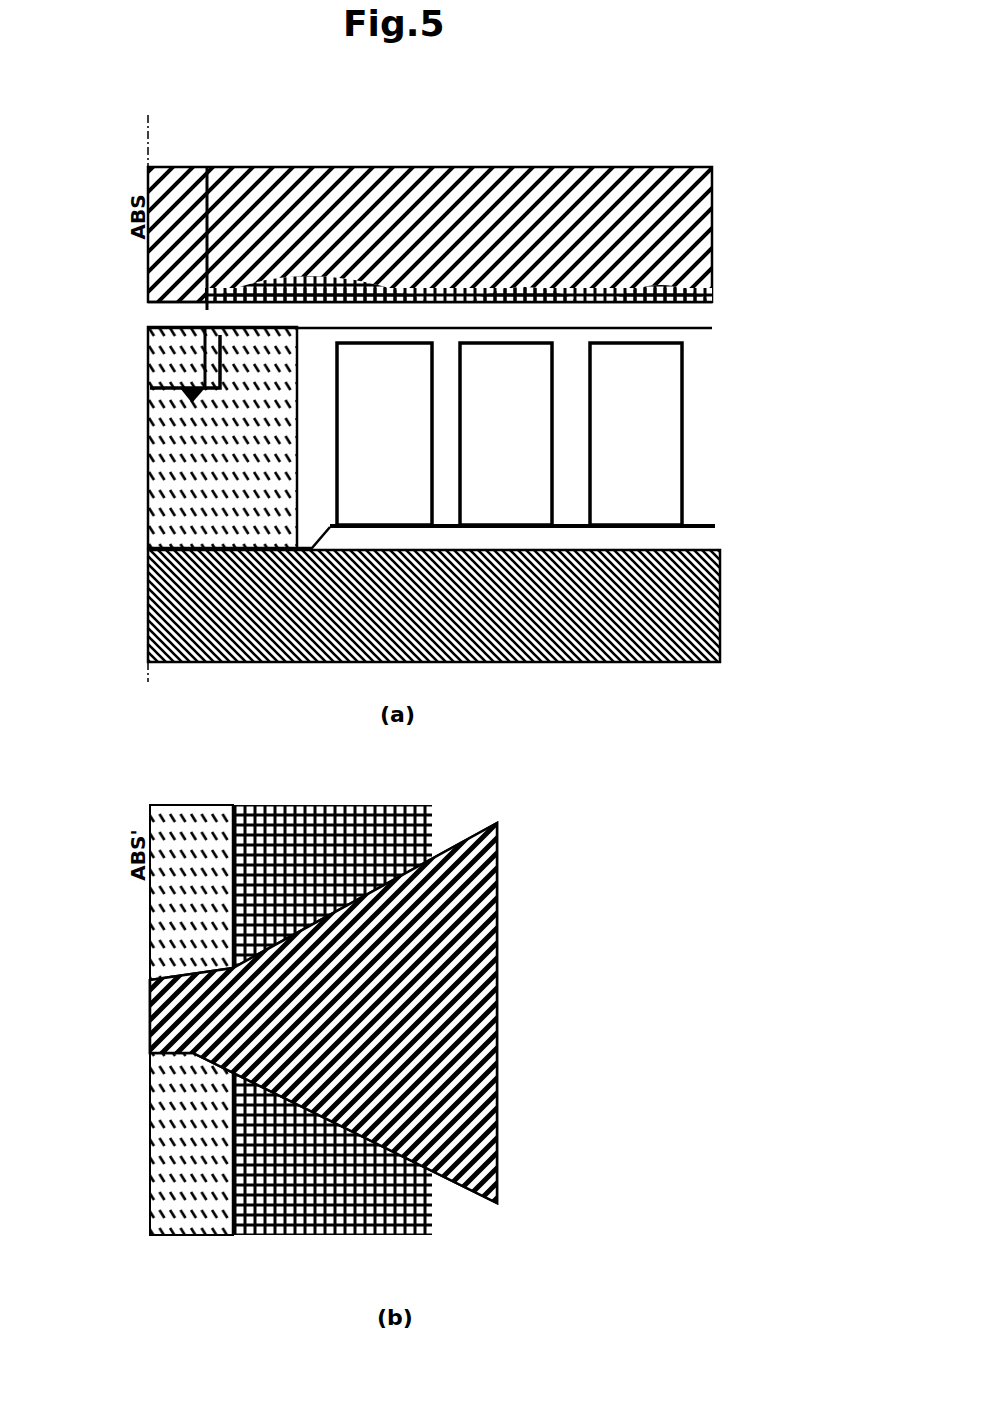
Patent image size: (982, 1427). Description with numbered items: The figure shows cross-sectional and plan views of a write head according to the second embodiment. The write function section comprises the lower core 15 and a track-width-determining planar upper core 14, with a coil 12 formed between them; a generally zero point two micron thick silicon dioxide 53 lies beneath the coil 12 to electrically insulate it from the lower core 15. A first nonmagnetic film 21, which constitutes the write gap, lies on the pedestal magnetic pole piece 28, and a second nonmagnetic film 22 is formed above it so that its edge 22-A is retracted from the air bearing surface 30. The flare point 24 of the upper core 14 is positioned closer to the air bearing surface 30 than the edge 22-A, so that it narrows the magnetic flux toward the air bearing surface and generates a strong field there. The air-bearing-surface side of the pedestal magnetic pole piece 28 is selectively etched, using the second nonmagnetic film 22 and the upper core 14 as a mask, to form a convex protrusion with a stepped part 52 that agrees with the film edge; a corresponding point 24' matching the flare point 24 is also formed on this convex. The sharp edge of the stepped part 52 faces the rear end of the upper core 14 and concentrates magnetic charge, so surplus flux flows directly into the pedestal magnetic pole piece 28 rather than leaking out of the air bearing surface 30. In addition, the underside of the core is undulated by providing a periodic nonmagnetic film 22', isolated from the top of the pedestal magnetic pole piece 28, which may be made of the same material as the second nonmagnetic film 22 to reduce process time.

The upper core 14 is at (630, 232).
The edge of the second nonmagnetic film 22-A is at (228, 278).
The flare point 24 is at (147, 645).
The air bearing surface 30 is at (138, 398).
The second nonmagnetic film 22 is at (241, 778).
The nonmagnetic film 22' is at (496, 293).
The first nonmagnetic film 21 is at (630, 322).
The stepped part 52 is at (167, 363).
The corresponding point 24' is at (117, 419).
The coil 12 is at (613, 453).
The pedestal magnetic pole piece 28 is at (193, 470).
The silicon dioxide 53 is at (618, 540).
The lower core 15 is at (600, 630).